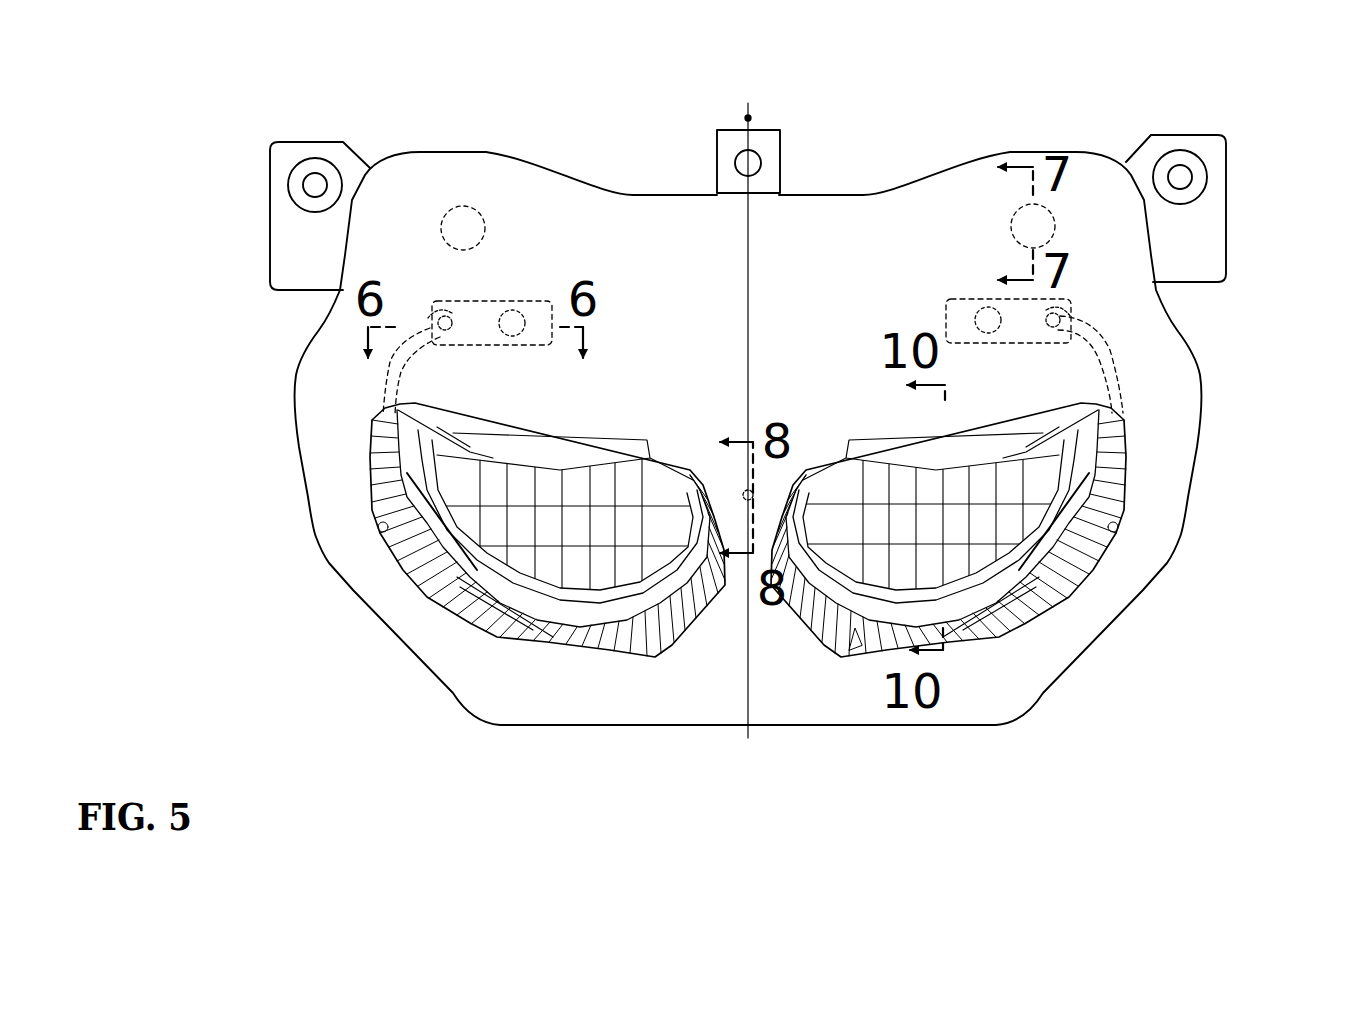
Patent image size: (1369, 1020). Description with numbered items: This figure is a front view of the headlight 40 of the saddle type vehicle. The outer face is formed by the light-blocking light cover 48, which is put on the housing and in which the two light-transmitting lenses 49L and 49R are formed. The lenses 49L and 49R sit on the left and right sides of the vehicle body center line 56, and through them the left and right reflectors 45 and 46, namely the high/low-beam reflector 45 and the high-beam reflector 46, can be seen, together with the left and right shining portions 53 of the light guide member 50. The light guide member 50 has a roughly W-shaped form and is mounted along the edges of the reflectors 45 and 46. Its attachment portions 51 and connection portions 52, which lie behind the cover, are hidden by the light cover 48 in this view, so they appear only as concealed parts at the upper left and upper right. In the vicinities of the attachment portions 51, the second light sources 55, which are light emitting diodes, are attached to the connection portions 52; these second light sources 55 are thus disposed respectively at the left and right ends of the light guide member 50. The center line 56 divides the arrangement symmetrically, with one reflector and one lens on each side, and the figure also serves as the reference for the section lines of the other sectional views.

The headlight 40 is at (811, 425).
The high/low-beam reflector 45 is at (1013, 517).
The high-beam reflector 46 is at (487, 522).
The light cover 48 is at (667, 300).
The lens 49R is at (509, 598).
The lens 49L is at (987, 595).
The light guide member 50 is at (858, 630).
The attachment portion 51 is at (541, 301).
The connection portion 52 is at (388, 384).
The shining portion 53 is at (468, 557).
The second light source 55 is at (445, 313).
The vehicle body center line 56 is at (750, 117).